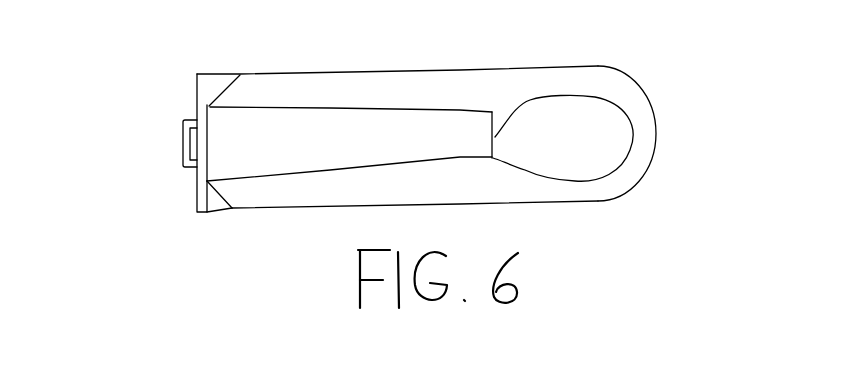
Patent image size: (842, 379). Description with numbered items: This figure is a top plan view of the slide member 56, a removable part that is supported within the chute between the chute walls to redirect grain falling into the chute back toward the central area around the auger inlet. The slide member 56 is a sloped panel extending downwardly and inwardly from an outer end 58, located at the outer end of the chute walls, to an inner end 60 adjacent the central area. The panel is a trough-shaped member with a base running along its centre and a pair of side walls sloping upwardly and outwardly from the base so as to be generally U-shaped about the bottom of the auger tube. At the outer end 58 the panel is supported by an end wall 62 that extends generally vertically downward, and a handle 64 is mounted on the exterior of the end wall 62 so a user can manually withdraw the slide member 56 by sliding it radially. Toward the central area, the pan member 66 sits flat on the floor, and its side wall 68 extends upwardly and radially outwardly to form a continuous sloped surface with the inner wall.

The slide member 56 is at (340, 126).
The outer end 58 is at (205, 120).
The inner end 60 is at (496, 136).
The end wall 62 is at (195, 180).
The handle 64 is at (183, 138).
The pan member 66 is at (590, 135).
The side wall 68 is at (647, 137).